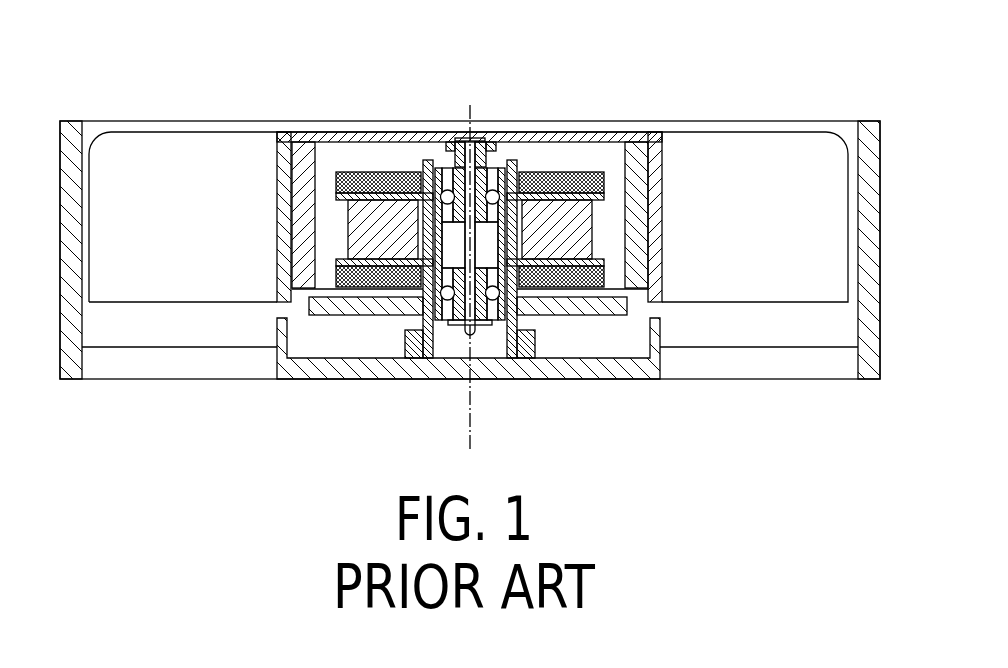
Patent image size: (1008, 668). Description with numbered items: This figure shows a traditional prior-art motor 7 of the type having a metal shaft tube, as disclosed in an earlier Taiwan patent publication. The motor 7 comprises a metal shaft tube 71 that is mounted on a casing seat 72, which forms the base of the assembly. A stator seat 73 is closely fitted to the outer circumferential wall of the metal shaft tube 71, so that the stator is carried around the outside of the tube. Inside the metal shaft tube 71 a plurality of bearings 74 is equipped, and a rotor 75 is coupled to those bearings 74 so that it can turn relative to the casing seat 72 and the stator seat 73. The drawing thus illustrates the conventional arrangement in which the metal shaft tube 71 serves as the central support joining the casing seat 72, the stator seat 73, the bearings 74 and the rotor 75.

The motor 7 is at (756, 90).
The metal shaft tube 71 is at (513, 167).
The casing seat 72 is at (622, 368).
The stator seat 73 is at (592, 155).
The bearings 74 is at (502, 173).
The rotor 75 is at (352, 133).